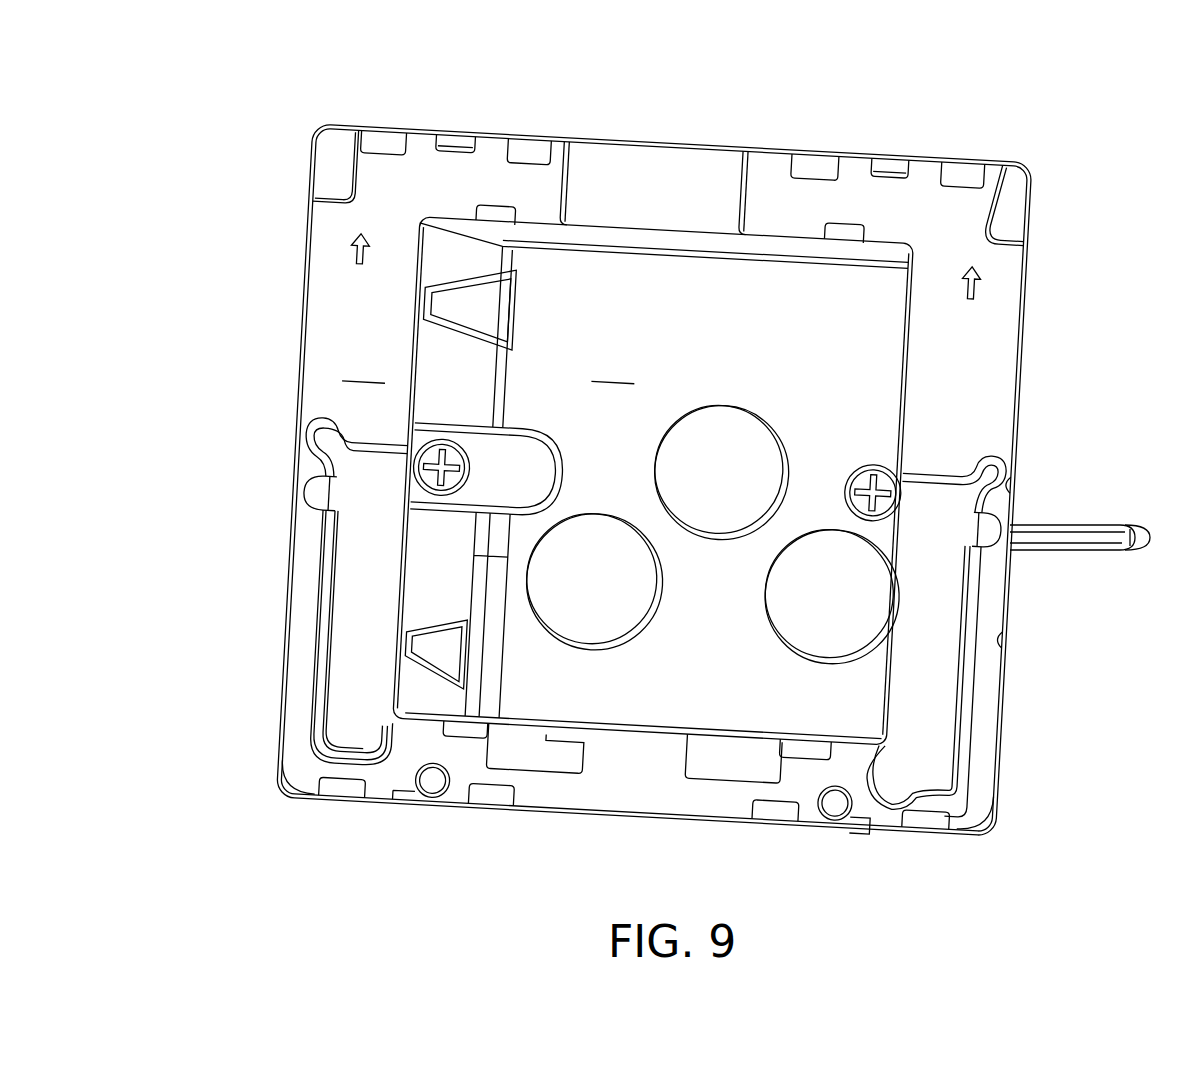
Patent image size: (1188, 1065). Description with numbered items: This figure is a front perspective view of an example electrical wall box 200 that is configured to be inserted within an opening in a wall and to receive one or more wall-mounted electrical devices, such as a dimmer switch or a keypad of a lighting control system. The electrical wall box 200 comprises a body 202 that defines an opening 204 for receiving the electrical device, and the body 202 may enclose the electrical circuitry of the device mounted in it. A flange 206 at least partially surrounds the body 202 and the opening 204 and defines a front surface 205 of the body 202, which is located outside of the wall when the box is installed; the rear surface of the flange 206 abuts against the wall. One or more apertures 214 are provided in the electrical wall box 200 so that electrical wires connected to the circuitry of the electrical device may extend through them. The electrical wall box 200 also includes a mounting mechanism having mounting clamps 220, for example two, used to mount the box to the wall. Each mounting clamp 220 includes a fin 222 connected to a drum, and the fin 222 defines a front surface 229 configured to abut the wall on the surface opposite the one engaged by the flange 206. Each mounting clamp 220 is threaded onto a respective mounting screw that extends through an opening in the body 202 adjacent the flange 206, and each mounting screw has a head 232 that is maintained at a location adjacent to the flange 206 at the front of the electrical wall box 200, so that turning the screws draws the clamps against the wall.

The electrical wall box 200 is at (1029, 90).
The body 202 is at (653, 473).
The opening 204 is at (607, 290).
The front surface 205 is at (360, 559).
The flange 206 is at (335, 243).
The aperture 214 is at (733, 407).
The mounting clamp 220 is at (1097, 573).
The fin 222 is at (1083, 523).
The front surface 229 is at (1055, 540).
The head 232 is at (445, 440).